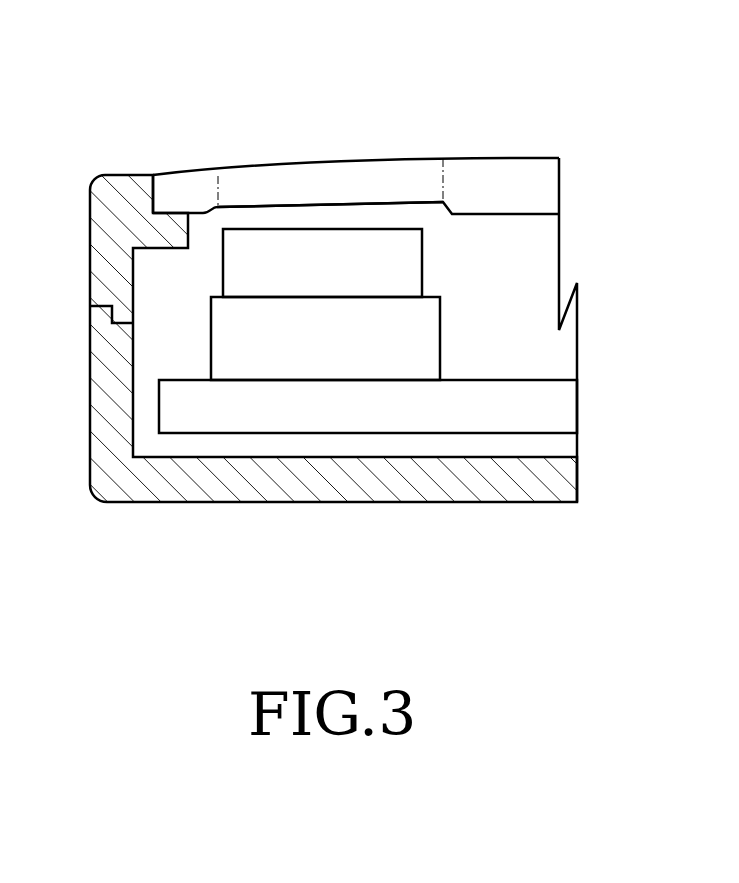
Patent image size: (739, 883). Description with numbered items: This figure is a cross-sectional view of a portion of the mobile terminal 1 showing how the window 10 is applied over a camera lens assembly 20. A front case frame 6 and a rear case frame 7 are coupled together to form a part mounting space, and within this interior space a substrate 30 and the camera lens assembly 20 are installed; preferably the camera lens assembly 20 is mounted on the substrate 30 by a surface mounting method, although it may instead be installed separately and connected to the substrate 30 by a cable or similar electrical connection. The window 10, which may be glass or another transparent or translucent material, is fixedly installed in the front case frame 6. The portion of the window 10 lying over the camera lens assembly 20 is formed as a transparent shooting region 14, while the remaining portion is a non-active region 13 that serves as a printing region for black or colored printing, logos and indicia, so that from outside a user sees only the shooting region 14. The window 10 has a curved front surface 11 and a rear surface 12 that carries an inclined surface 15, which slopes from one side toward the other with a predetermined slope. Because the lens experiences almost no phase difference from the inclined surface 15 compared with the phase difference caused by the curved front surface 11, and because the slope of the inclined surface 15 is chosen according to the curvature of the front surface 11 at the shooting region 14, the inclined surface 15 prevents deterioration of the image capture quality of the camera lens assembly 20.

The mobile terminal 1 is at (138, 90).
The front case frame 6 is at (90, 246).
The rear case frame 7 is at (90, 435).
The window 10 is at (543, 149).
The front surface 11 is at (347, 157).
The rear surface 12 is at (503, 214).
The non-active region 13 is at (488, 174).
The shooting region 14 is at (413, 174).
The inclined surface 15 is at (300, 208).
The camera lens assembly 20 is at (440, 318).
The substrate 30 is at (518, 380).